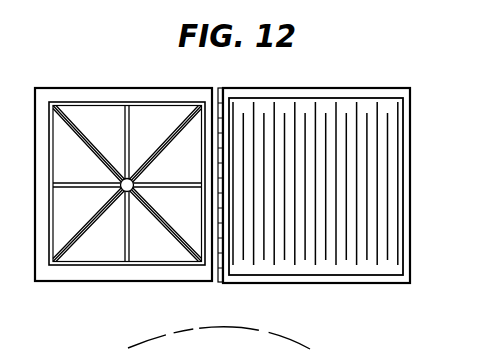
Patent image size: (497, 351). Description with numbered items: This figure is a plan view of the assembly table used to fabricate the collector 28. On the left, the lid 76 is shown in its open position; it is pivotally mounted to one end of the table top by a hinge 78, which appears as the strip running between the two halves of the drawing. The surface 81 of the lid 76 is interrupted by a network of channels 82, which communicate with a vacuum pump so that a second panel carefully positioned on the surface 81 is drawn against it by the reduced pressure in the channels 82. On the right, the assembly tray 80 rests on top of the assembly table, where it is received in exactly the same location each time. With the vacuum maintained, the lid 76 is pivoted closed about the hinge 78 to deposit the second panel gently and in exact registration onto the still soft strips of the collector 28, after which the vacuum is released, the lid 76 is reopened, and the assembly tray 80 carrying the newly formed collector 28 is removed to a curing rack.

The lid 76 is at (147, 66).
The hinge 78 is at (221, 88).
The collector 28 is at (378, 175).
The assembly tray 80 is at (405, 224).
The surface 81 is at (152, 247).
The channels 82 is at (124, 246).